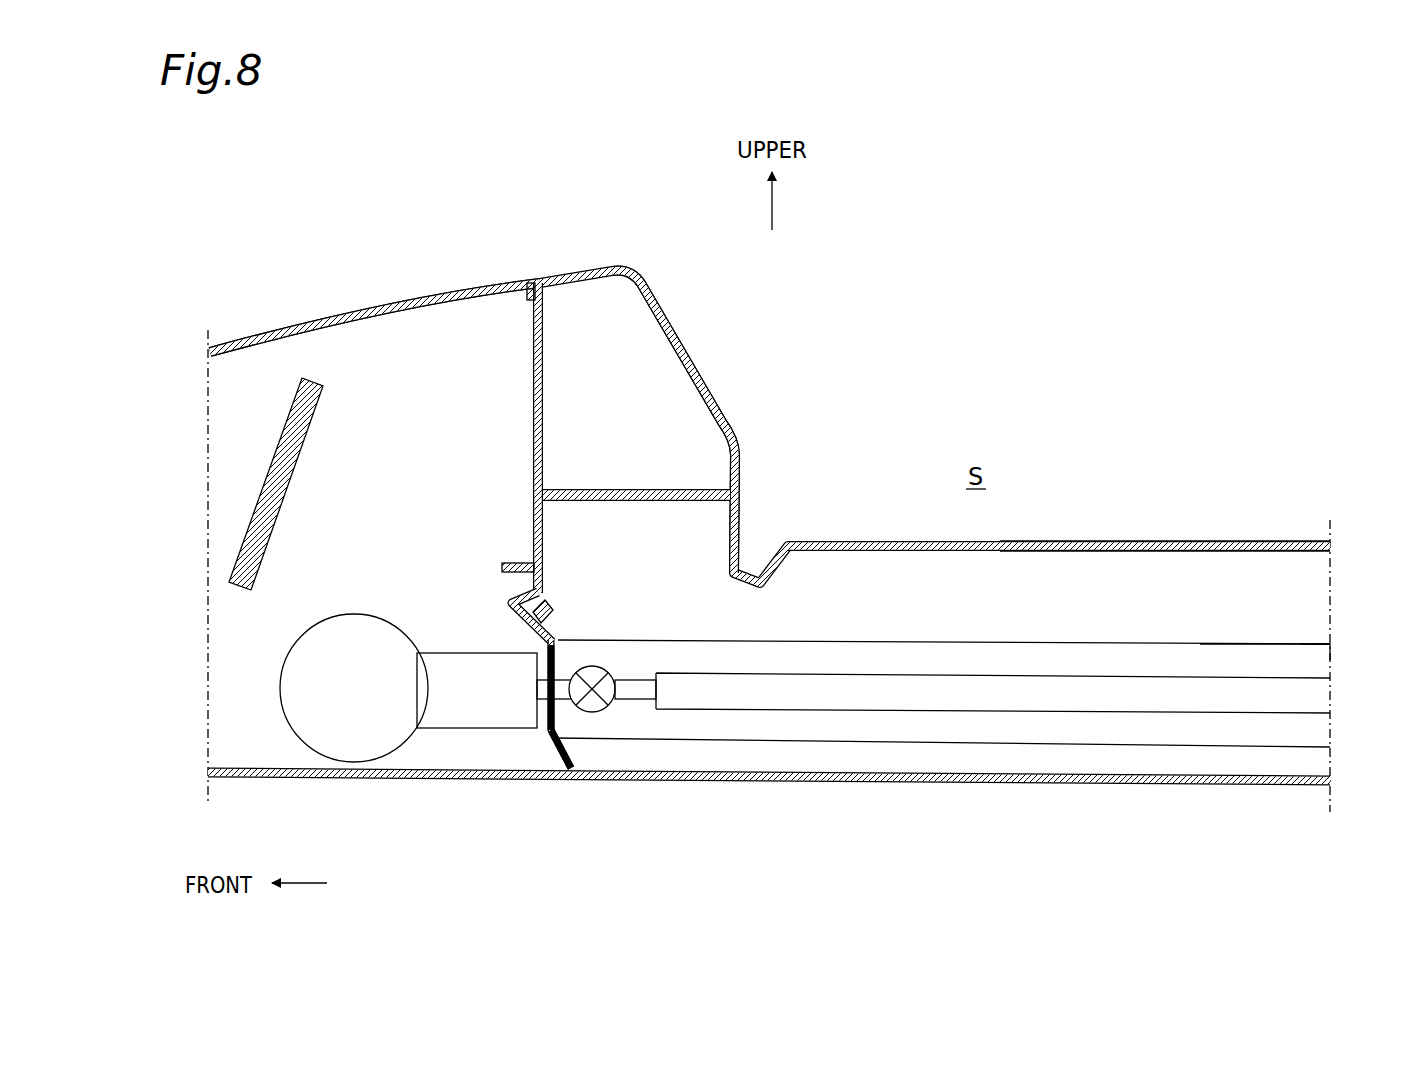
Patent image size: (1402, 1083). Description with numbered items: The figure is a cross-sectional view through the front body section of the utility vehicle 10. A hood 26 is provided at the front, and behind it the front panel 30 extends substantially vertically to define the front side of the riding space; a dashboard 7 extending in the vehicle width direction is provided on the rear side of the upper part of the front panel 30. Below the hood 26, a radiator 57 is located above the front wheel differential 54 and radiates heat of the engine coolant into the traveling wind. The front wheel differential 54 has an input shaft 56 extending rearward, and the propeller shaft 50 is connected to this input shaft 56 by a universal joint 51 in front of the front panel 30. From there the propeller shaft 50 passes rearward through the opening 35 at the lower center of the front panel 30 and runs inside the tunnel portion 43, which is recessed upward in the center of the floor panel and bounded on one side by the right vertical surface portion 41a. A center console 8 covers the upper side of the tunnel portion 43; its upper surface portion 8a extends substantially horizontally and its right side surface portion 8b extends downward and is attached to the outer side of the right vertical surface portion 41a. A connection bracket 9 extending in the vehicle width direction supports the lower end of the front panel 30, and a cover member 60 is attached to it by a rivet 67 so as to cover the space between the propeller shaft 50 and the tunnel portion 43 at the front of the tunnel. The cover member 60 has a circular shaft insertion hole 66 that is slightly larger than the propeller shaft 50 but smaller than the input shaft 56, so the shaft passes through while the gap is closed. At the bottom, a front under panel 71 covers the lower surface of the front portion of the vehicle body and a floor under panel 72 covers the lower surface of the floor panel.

The utility vehicle 10 is at (610, 254).
The hood 26 is at (310, 318).
The dashboard 7 is at (682, 335).
The front panel 30 is at (533, 385).
The radiator 57 is at (236, 548).
The connection bracket 9 is at (546, 590).
The rivet 67 is at (556, 611).
The cover member 60 is at (570, 652).
The opening 35 is at (570, 778).
The shaft insertion hole 66 is at (558, 714).
The front under panel 71 is at (362, 780).
The floor under panel 72 is at (966, 784).
The front wheel differential 54 is at (300, 742).
The input shaft 56 is at (480, 730).
The universal joint 51 is at (602, 710).
The propeller shaft 50 is at (1052, 712).
The center console 8 is at (1114, 540).
The upper surface portion 8a is at (1172, 540).
The right side surface portion 8b is at (1250, 575).
The right vertical surface portion 41a is at (1295, 655).
The tunnel portion 43 is at (1312, 655).